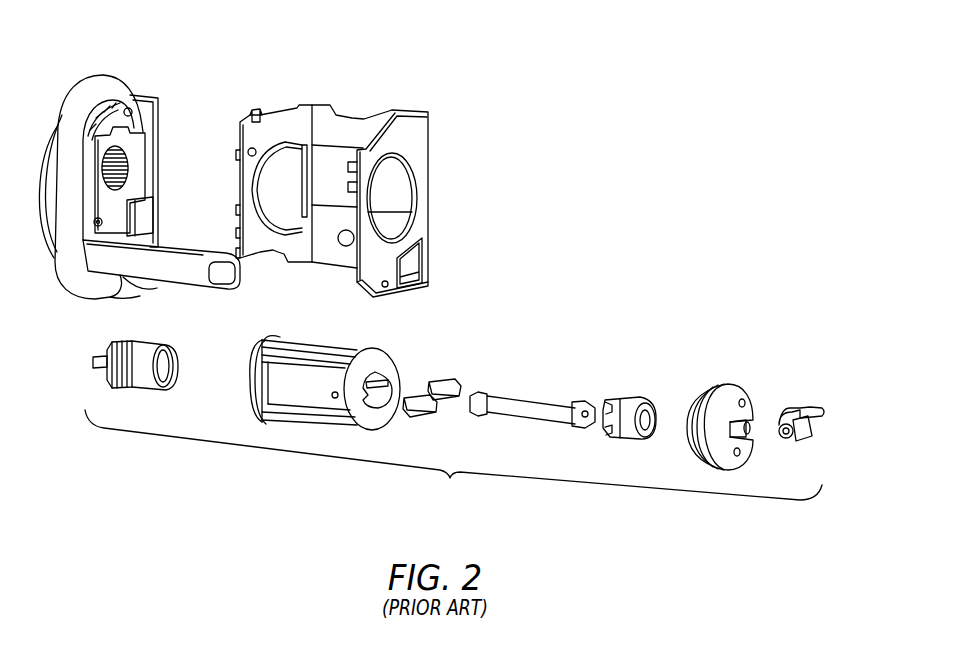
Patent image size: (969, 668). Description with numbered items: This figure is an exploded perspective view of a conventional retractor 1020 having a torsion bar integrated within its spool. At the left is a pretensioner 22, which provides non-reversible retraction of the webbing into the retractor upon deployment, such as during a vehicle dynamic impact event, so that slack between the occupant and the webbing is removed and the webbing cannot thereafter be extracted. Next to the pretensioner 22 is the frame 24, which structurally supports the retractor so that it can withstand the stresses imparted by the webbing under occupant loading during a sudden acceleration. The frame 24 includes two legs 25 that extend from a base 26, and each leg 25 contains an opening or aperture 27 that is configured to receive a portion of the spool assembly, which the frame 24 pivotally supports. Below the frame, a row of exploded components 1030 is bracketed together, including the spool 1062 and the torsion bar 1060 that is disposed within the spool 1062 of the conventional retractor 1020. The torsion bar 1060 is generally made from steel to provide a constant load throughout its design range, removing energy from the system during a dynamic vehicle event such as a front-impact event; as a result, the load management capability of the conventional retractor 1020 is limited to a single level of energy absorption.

The pretensioner 22 is at (104, 76).
The frame 24 is at (365, 112).
The legs 25 is at (278, 92).
The base 26 is at (322, 98).
The aperture 27 is at (279, 191).
The conventional retractor 1020 is at (711, 218).
The lock cylinder components 1030 is at (454, 425).
The torsion bar 1060 is at (533, 405).
The spool 1062 is at (320, 352).